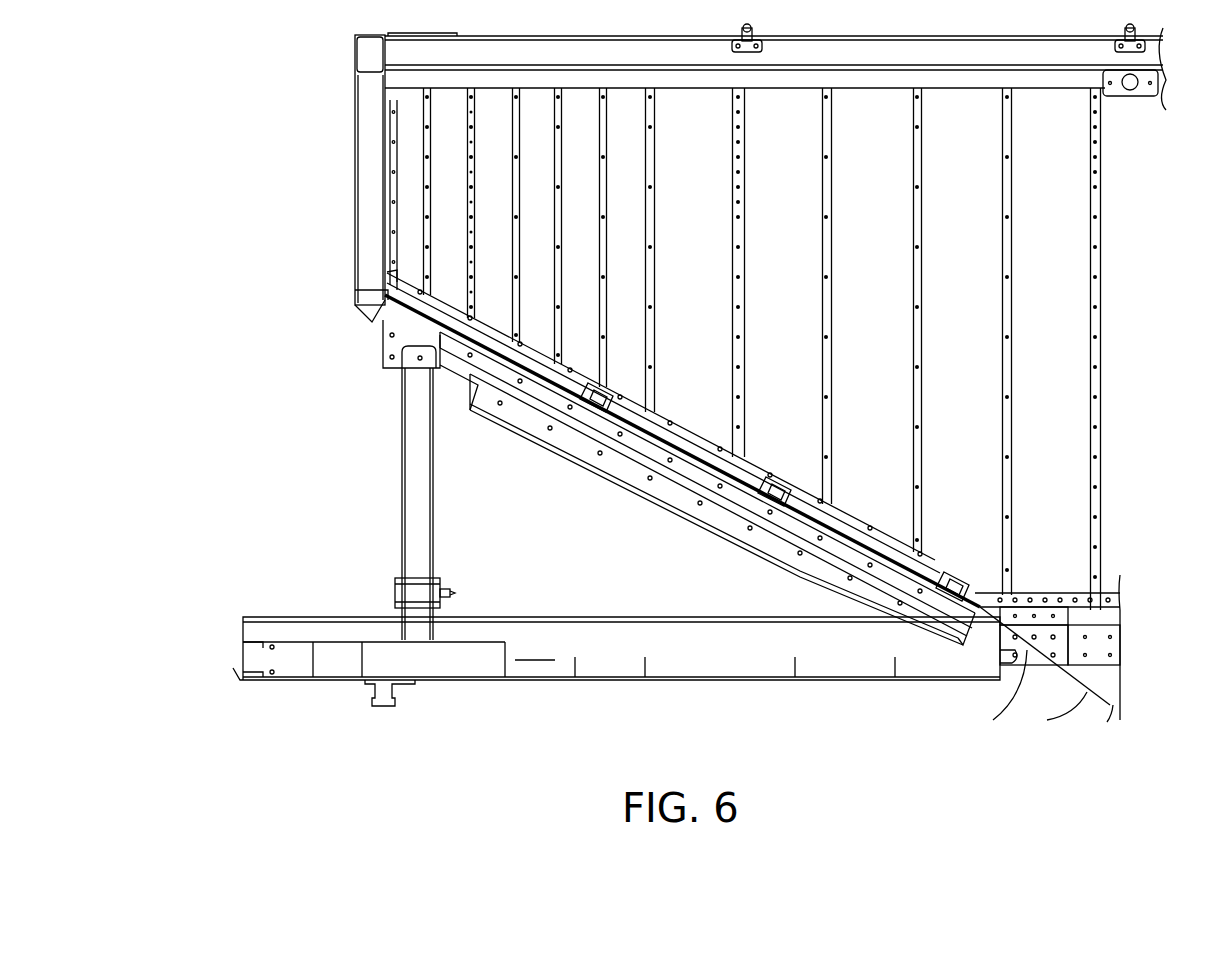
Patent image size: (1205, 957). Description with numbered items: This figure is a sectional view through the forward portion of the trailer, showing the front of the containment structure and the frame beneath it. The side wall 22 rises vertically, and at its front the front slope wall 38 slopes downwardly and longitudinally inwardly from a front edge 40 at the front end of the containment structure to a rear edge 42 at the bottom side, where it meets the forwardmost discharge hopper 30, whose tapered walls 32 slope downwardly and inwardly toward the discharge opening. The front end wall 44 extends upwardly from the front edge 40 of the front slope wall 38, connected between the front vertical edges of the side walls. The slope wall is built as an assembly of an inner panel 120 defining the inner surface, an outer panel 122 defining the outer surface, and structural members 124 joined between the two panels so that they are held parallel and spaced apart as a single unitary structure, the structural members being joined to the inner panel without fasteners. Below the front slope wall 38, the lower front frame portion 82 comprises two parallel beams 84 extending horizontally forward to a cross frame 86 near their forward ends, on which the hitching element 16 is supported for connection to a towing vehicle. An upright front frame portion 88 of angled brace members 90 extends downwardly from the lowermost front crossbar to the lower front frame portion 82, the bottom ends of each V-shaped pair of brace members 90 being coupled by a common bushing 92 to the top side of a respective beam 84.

The hitching element 16 is at (395, 703).
The side wall 22 is at (892, 262).
The discharge hopper 30 is at (1083, 704).
The tapered wall 32 is at (1035, 662).
The front slope wall 38 is at (683, 455).
The front edge 40 is at (380, 308).
The rear edge 42 is at (976, 598).
The front end wall 44 is at (385, 175).
The lower front frame portion 82 is at (202, 648).
The beam 84 is at (690, 656).
The cross frame 86 is at (355, 660).
The upright front frame portion 88 is at (303, 489).
The brace member 90 is at (415, 430).
The bushing 92 is at (405, 592).
The inner panel 120 is at (668, 465).
The outer panel 122 is at (725, 505).
The structural member 124 is at (700, 480).